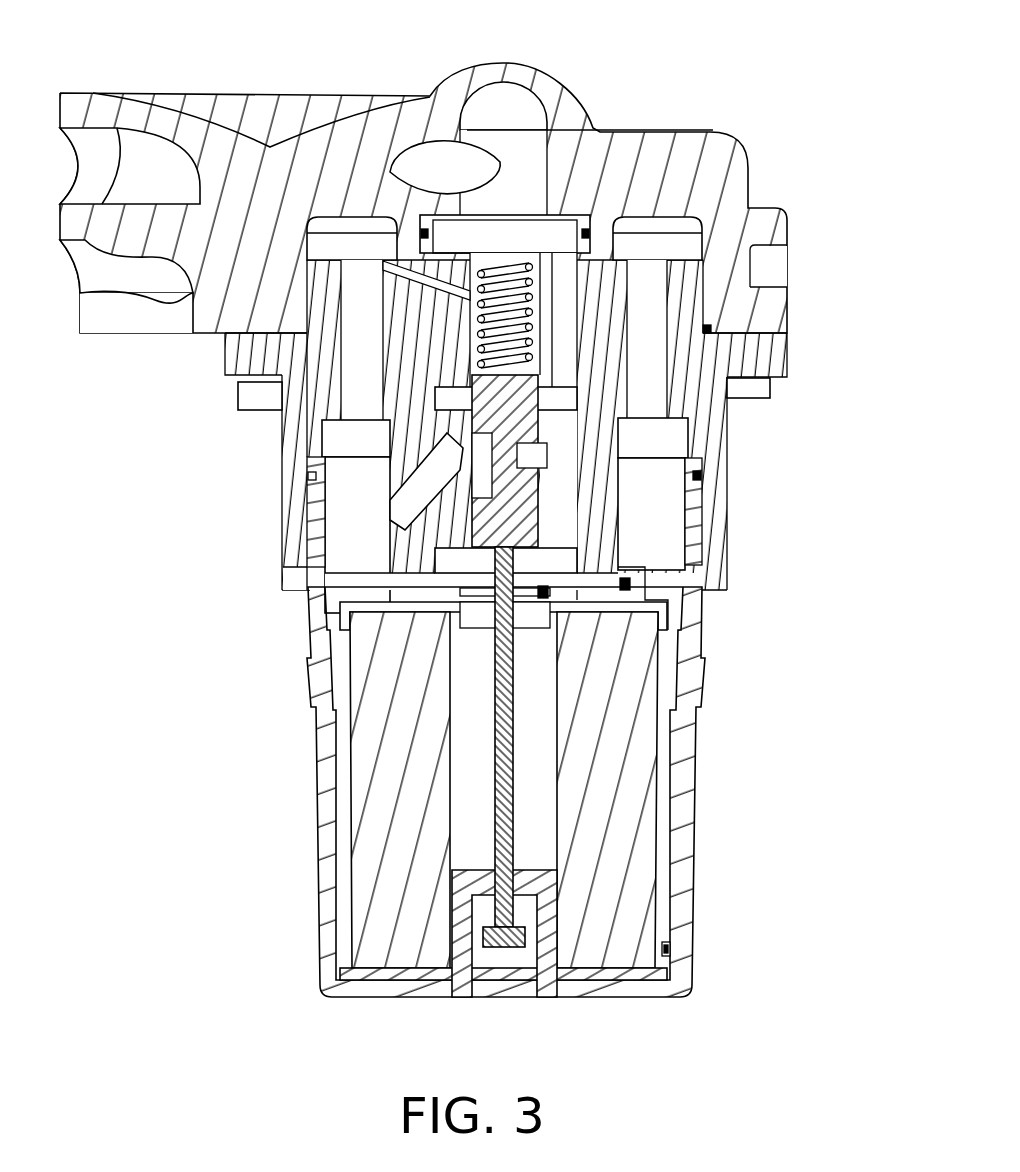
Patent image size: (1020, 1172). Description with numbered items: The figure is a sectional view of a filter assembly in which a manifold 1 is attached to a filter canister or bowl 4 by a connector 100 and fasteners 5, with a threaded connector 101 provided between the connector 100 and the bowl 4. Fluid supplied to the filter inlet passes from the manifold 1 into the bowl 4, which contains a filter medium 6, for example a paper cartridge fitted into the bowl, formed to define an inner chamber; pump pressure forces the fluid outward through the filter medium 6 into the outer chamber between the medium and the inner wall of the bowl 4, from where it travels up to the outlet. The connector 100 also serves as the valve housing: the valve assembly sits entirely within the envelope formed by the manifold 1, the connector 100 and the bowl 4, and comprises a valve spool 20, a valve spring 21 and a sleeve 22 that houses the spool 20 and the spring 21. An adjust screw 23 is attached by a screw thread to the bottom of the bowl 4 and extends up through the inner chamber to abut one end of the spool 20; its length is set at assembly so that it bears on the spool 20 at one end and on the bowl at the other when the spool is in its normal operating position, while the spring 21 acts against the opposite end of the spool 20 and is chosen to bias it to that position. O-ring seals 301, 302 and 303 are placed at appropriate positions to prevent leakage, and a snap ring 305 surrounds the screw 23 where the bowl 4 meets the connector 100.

The manifold 1 is at (258, 122).
The filter canister or bowl 4 is at (312, 698).
The fasteners 5 is at (236, 394).
The filter medium 6 is at (390, 838).
The valve spool 20 is at (517, 430).
The valve spring 21 is at (538, 296).
The sleeve 22 is at (415, 568).
The adjust screw 23 is at (510, 820).
The connector 100 is at (280, 433).
The threaded connector 101 is at (302, 540).
The O-ring seal 301 is at (598, 228).
The O-ring seal 302 is at (710, 330).
The O-ring seal 303 is at (674, 948).
The snap ring 305 is at (549, 592).